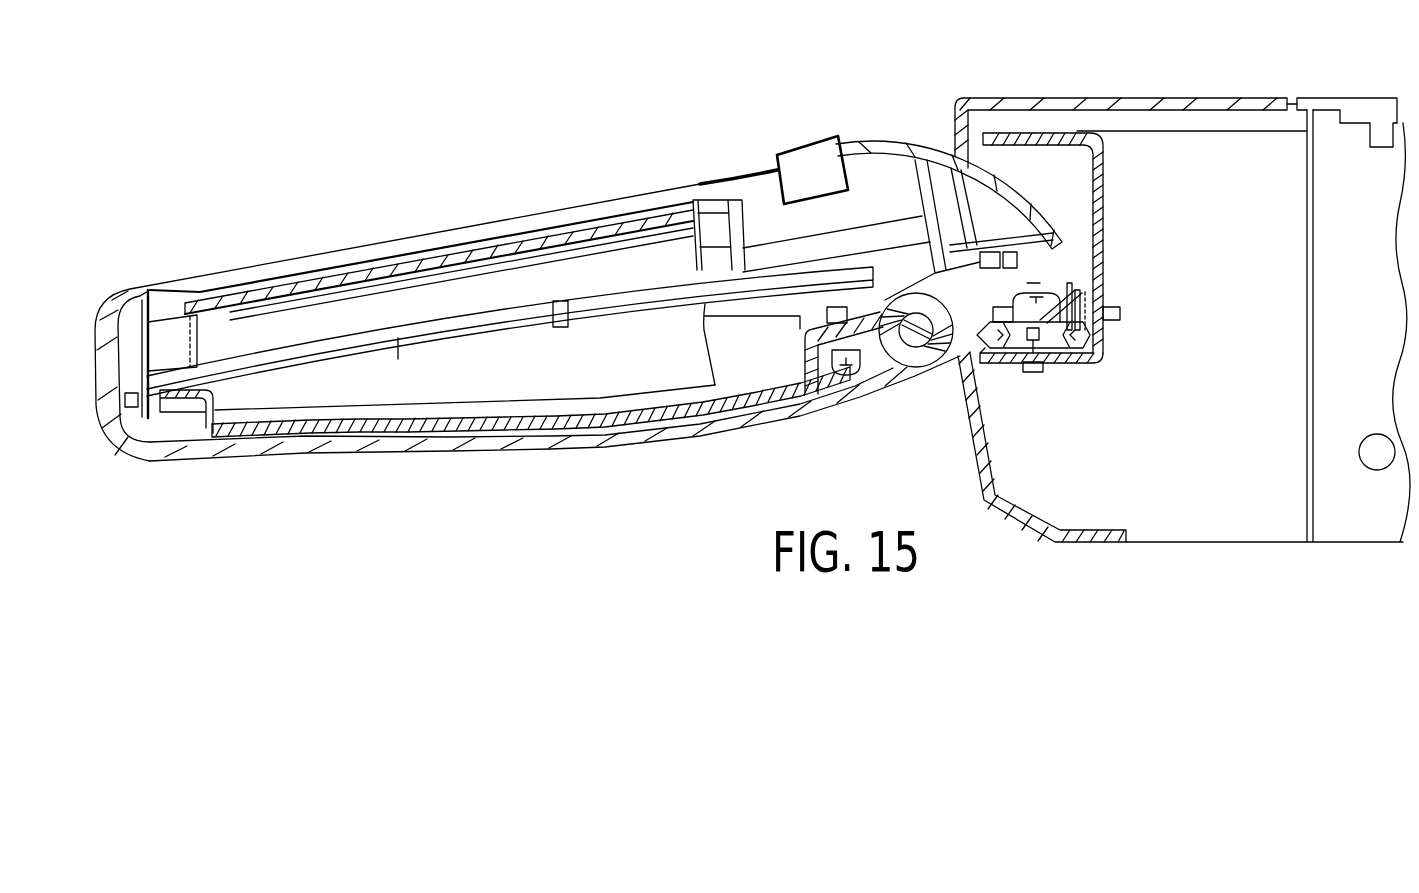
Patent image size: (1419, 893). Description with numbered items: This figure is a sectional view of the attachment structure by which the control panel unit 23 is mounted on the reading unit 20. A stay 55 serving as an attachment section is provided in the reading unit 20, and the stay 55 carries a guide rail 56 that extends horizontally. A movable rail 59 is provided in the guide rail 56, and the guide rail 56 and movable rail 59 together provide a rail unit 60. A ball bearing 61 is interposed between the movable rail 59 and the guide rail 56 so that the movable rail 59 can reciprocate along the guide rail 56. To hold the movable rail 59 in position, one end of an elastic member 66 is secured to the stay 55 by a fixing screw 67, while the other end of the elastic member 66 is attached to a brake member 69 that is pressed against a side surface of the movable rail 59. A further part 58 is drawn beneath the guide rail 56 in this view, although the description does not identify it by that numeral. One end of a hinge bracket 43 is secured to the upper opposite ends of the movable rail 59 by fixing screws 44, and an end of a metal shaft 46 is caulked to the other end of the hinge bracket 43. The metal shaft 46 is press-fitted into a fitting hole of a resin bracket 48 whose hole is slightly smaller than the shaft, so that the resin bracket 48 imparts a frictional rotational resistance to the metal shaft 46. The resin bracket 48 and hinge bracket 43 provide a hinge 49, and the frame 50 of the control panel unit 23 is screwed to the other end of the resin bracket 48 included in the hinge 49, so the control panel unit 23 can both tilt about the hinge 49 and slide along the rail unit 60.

The reading unit 20 is at (1327, 98).
The control panel unit 23 is at (297, 257).
The hinge bracket 43 is at (980, 283).
The fixing screw 44 is at (1035, 272).
The metal shaft 46 is at (921, 347).
The resin bracket 48 is at (877, 360).
The hinge 49 is at (943, 275).
The frame 50 is at (757, 409).
The stay 55 is at (1106, 203).
The guide rail 56 is at (1100, 352).
The fixing screw 58 is at (1048, 386).
The movable rail 59 is at (1040, 320).
The rail unit 60 is at (1013, 293).
The ball bearing 61 is at (990, 363).
The elastic member 66 is at (1088, 300).
The fixing screw 67 is at (1122, 317).
The brake member 69 is at (1070, 283).